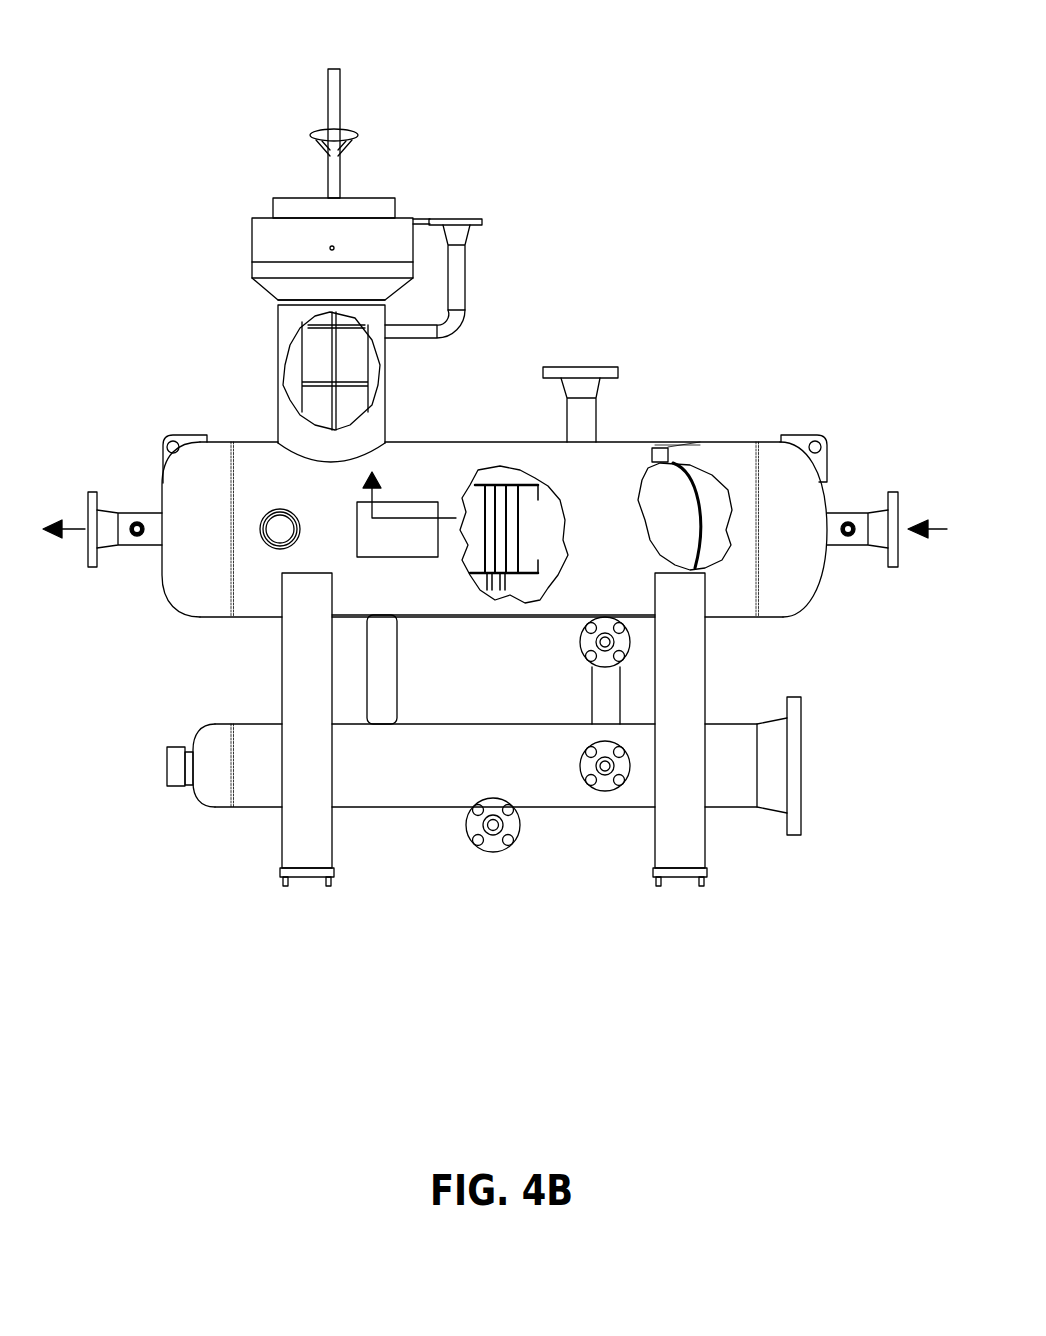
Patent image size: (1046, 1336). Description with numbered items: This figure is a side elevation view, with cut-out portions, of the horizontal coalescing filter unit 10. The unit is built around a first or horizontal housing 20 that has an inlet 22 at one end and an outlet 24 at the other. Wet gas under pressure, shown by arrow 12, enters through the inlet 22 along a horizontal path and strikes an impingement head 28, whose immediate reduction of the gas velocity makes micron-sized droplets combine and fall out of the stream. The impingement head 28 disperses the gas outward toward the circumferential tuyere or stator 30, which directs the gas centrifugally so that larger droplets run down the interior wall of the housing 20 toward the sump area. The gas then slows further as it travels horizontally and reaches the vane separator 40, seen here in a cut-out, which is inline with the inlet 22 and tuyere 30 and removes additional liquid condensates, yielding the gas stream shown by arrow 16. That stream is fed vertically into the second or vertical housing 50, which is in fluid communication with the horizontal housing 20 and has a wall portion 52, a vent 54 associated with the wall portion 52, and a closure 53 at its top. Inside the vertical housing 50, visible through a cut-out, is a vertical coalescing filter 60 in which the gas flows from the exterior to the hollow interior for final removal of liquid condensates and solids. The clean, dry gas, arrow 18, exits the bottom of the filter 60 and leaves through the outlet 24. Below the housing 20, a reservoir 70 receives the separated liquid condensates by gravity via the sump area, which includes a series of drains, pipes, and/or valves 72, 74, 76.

The horizontal coalescing filter unit 10 is at (115, 190).
The gas under pressure 12 is at (947, 529).
The gas stream after vane separator 16 is at (413, 517).
The clean dry gas 18 is at (77, 527).
The horizontal housing 20 is at (498, 442).
The inlet 22 is at (892, 492).
The outlet 24 is at (96, 492).
The impingement head 28 is at (695, 480).
The tuyere or stator 30 is at (658, 448).
The vane separator 40 is at (514, 474).
The vertical housing 50 is at (388, 387).
The wall portion 52 is at (278, 410).
The closure 53 is at (372, 197).
The vent 54 is at (482, 219).
The vertical coalescing filter 60 is at (323, 371).
The reservoir 70 is at (417, 782).
The drain, pipe, and/or valve 72 is at (388, 677).
The drain, pipe, and/or valve 74 is at (602, 687).
The drain, pipe, and/or valve 76 is at (582, 633).